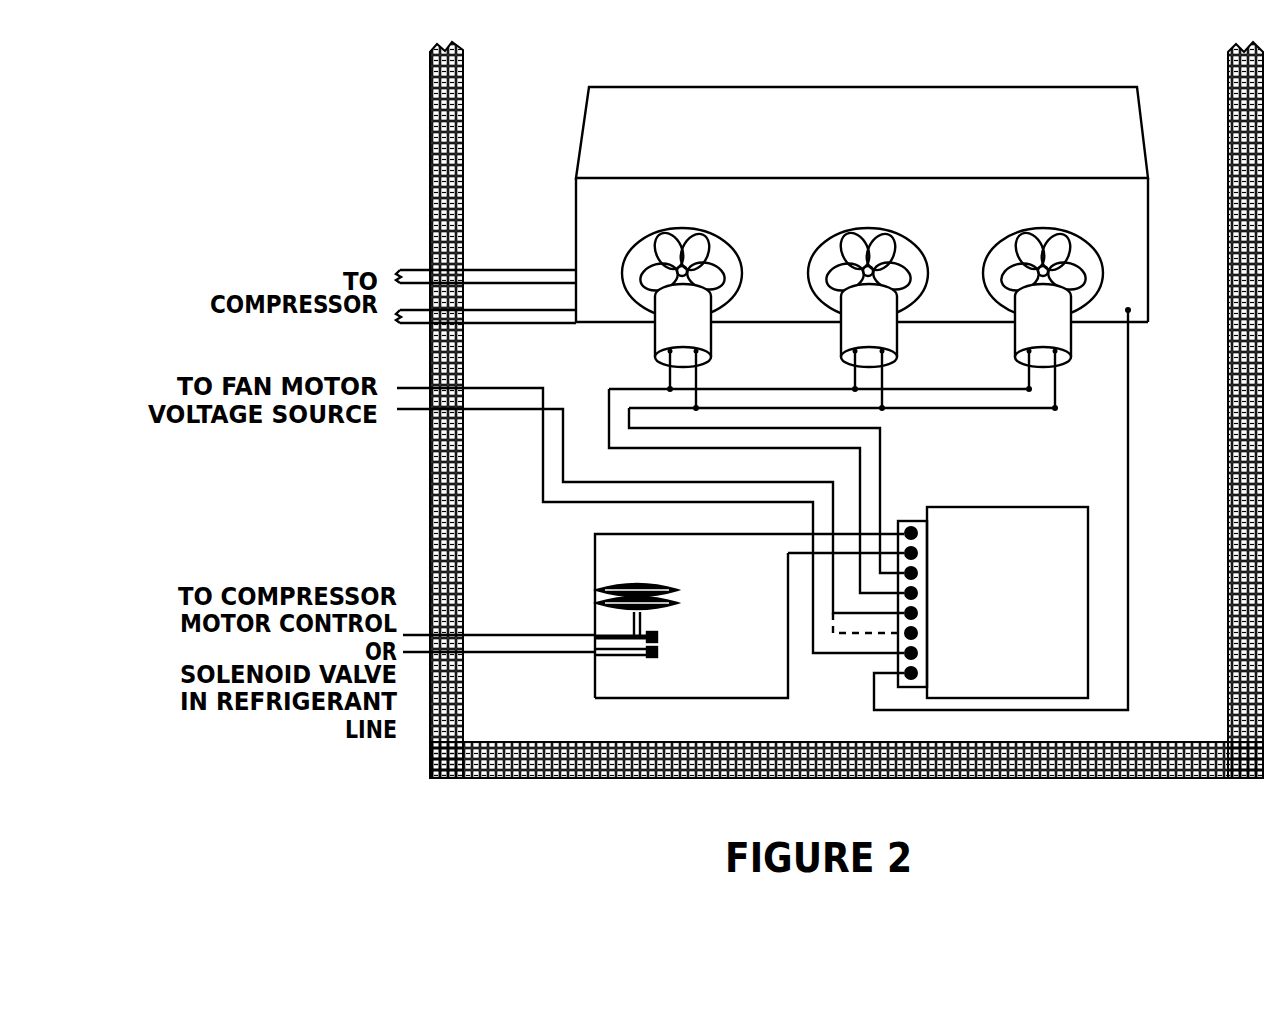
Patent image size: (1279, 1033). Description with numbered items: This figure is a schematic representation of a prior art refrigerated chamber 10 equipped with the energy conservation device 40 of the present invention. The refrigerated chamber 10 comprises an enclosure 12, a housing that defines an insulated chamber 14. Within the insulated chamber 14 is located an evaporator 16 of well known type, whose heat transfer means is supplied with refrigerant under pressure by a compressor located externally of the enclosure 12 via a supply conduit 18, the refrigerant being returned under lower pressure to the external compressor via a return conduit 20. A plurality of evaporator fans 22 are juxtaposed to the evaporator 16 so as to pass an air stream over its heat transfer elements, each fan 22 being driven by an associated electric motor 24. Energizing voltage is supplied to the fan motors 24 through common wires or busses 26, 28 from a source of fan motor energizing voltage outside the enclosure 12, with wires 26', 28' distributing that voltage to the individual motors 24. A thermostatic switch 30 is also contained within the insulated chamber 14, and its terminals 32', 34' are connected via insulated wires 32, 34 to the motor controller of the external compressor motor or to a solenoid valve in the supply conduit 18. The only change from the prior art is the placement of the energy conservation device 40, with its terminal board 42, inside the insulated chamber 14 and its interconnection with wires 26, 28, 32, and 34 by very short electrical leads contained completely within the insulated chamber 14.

The refrigerated chamber 10 is at (425, 826).
The enclosure 12 is at (838, 768).
The insulated chamber 14 is at (1198, 653).
The evaporator 16 is at (822, 81).
The supply conduit 18 is at (413, 275).
The return conduit 20 is at (413, 318).
The evaporator fan 22 is at (647, 305).
The electric motor 24 is at (660, 338).
The common wire 26 is at (650, 499).
The common wire 28 is at (650, 521).
The fan motor wire 26' is at (824, 472).
The fan motor wire 28' is at (878, 462).
The thermostatic switch 30 is at (678, 631).
The insulated wire 32 is at (499, 612).
The terminal of thermostatic switch 32' is at (588, 616).
The insulated wire 34 is at (499, 670).
The terminal of thermostatic switch 34' is at (639, 667).
The energy conservation device 40 is at (1025, 595).
The terminal board 42 is at (906, 523).